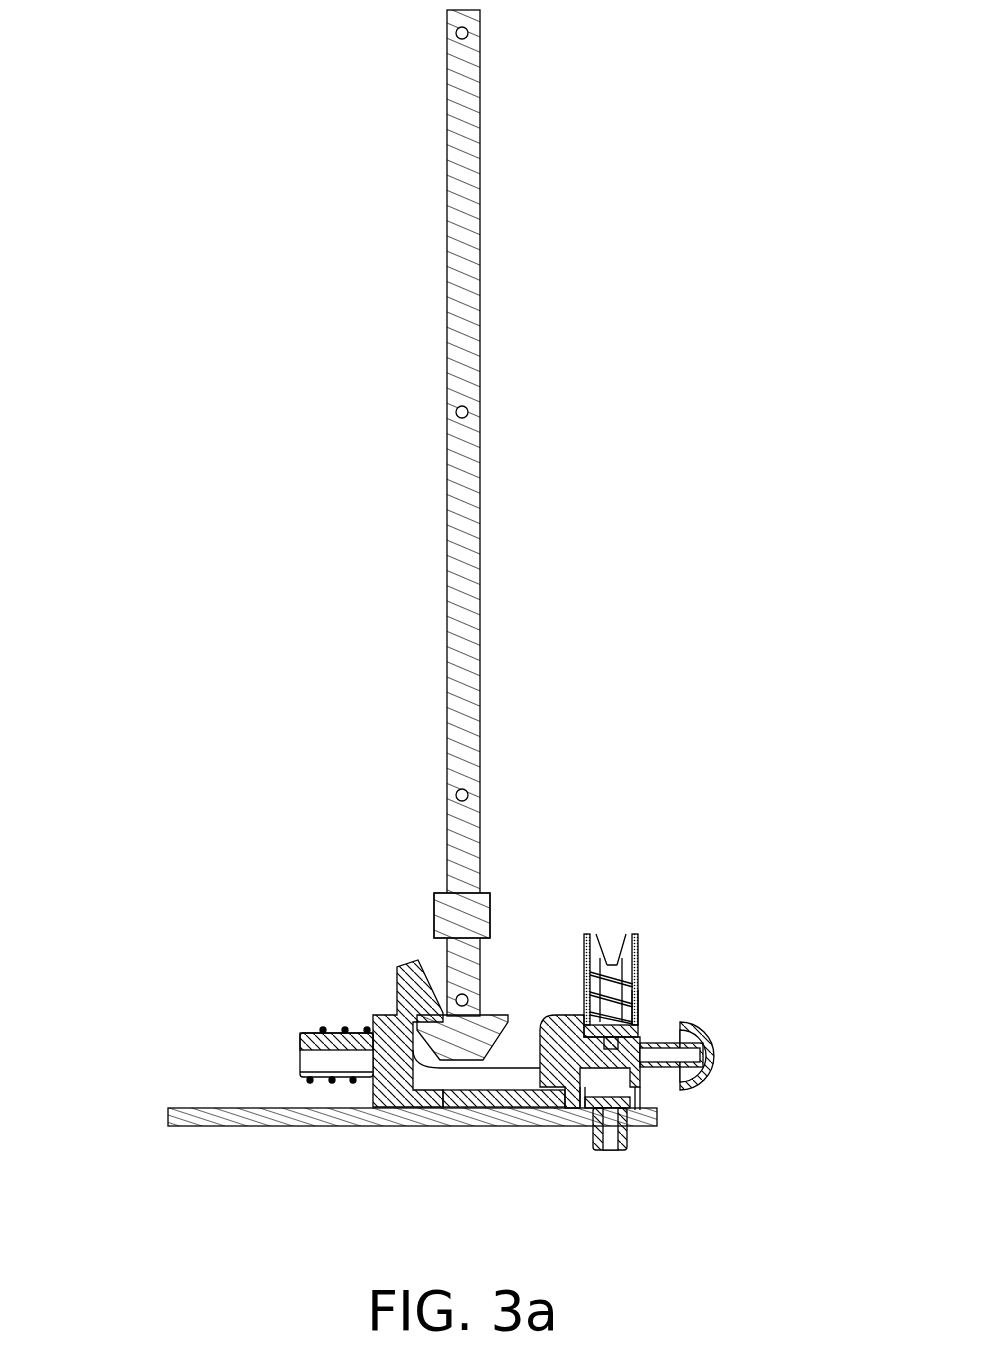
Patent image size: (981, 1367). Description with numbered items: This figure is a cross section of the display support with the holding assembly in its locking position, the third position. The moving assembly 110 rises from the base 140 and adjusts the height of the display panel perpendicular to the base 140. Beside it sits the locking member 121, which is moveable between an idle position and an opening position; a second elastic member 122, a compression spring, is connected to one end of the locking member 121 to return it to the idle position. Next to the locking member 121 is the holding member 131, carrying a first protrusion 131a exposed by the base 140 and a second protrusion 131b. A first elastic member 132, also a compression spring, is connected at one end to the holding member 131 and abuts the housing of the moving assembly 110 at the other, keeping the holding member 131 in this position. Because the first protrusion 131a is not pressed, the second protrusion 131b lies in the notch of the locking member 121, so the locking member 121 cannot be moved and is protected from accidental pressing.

The moving assembly 110 is at (434, 912).
The locking member 121 is at (548, 1017).
The second elastic member 122 is at (368, 1028).
The holding member 131 is at (640, 936).
The first protrusion 131a is at (630, 1135).
The second protrusion 131b is at (640, 1005).
The first elastic member 132 is at (607, 965).
The base 140 is at (170, 1110).